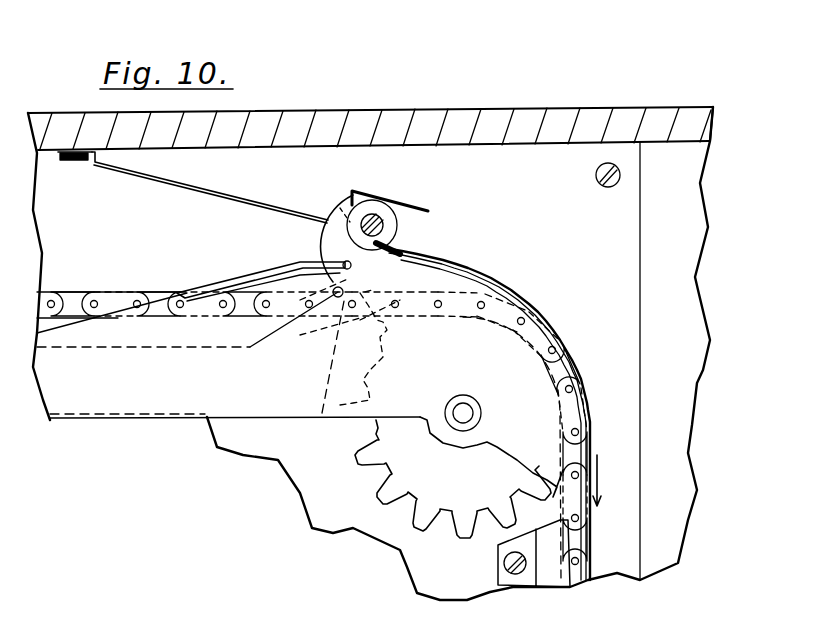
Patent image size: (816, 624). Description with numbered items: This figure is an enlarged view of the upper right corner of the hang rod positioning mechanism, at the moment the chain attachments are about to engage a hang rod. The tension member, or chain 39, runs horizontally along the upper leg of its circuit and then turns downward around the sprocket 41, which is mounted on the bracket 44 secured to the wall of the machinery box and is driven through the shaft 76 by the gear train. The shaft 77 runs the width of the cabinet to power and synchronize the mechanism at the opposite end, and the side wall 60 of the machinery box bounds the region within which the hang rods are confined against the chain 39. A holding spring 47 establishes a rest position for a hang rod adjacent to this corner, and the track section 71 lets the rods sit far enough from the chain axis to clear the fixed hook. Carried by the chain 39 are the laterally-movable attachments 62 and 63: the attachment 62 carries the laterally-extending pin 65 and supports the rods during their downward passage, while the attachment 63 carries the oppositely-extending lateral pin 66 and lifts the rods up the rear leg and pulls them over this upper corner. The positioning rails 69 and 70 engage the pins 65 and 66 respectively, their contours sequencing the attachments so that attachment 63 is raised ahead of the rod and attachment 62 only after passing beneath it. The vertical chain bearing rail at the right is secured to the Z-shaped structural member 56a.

The chain 39 is at (72, 292).
The sprocket 41 is at (393, 472).
The bracket 44 is at (413, 405).
The holding spring 47 is at (228, 195).
The Z-shaped structural member 56a is at (505, 563).
The side wall 60 is at (637, 263).
The laterally-movable attachment 62 is at (402, 250).
The laterally-movable attachment 63 is at (318, 240).
The laterally-extending pin 65 is at (336, 298).
The lateral pin 66 is at (300, 267).
The positioning rail 69 is at (263, 335).
The positioning rail 70 is at (126, 296).
The track section 71 is at (232, 286).
The shaft 76 is at (472, 409).
The shaft 77 is at (599, 186).